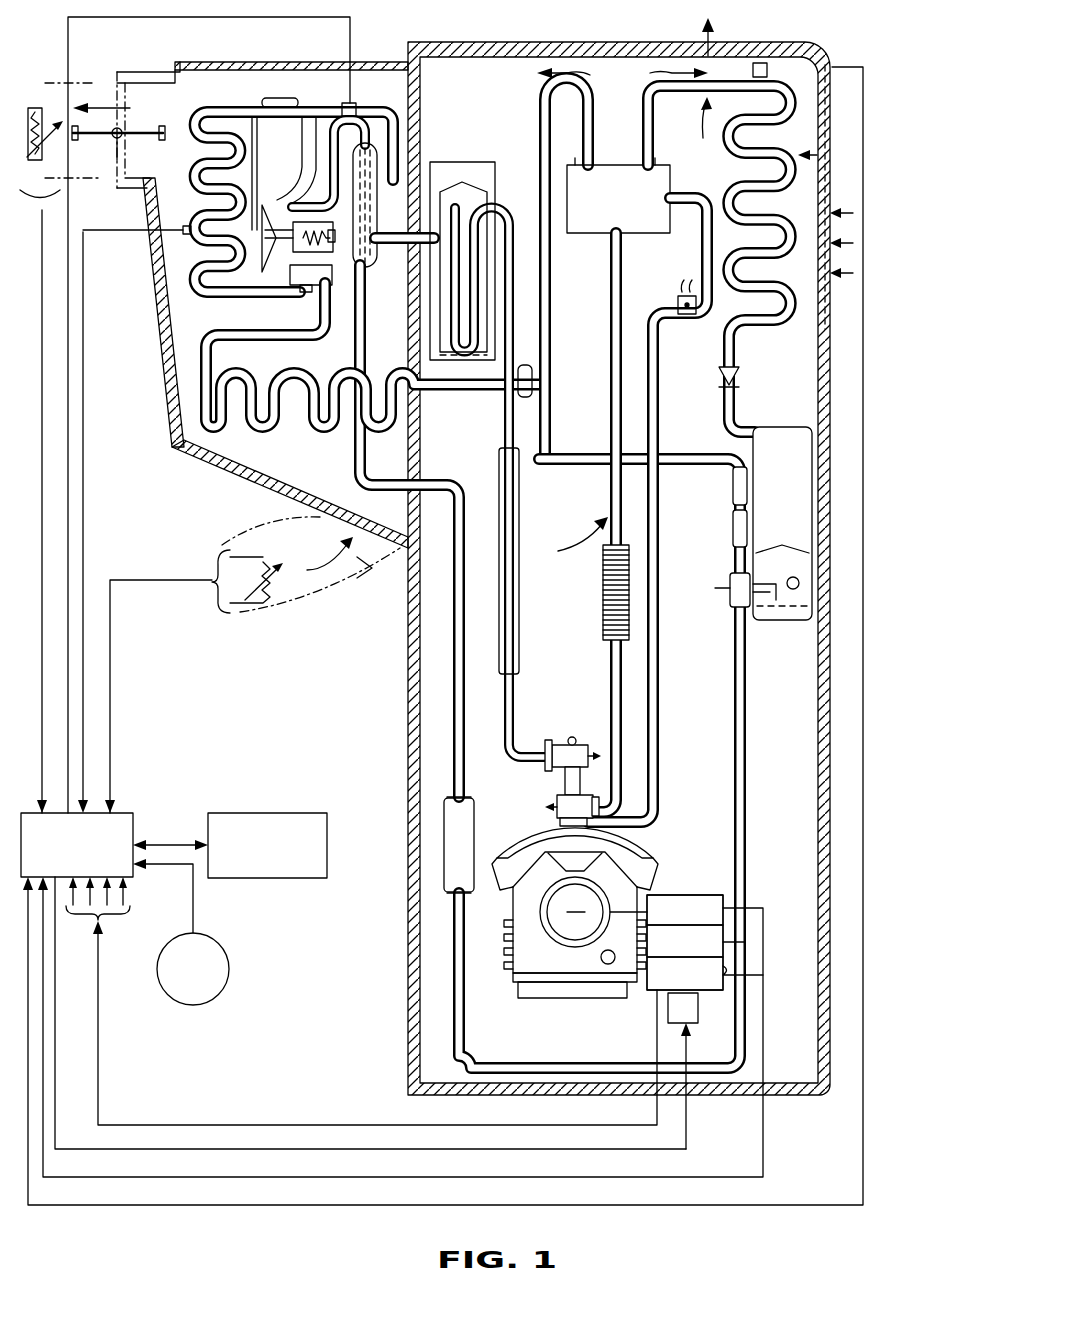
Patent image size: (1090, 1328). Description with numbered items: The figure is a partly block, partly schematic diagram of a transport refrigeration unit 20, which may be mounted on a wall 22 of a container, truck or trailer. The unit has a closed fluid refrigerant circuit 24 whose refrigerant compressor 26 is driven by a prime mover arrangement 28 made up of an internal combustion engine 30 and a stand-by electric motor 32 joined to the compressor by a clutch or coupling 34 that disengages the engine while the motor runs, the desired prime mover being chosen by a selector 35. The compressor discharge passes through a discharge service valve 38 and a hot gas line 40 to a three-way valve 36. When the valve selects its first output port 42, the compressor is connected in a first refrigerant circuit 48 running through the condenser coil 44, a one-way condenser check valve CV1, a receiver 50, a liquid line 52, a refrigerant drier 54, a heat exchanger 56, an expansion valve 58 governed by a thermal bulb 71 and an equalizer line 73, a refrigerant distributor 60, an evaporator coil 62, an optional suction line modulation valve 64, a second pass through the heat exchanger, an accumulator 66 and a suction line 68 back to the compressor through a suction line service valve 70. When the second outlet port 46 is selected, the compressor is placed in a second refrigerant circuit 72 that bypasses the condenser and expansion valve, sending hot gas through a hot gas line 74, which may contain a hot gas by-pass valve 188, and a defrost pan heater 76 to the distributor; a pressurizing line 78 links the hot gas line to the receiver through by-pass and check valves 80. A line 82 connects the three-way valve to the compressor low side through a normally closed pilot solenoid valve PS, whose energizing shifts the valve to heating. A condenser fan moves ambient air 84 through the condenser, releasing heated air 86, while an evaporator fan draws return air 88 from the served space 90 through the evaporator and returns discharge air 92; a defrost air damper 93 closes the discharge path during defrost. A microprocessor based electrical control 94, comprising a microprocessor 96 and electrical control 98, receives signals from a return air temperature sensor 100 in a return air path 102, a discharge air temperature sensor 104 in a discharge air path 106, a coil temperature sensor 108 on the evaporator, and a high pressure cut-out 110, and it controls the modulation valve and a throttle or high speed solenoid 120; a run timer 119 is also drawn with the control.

The transport refrigeration unit 20 is at (378, 1233).
The wall 22 is at (425, 125).
The closed fluid refrigerant circuit 24 is at (573, 539).
The refrigerant compressor 26 is at (513, 945).
The prime mover arrangement 28 is at (670, 893).
The internal combustion engine 30 is at (635, 992).
The stand-by electric motor 32 is at (735, 908).
The clutch or coupling 34 is at (735, 942).
The selector 35 is at (735, 968).
The three-way valve 36 is at (612, 164).
The discharge service valve 38 is at (556, 806).
The hot gas line 40 is at (612, 475).
The first output port 42 is at (655, 164).
The condenser coil 44 is at (788, 272).
The second outlet port 46 is at (568, 162).
The first refrigerant circuit 48 is at (668, 73).
The receiver 50 is at (772, 622).
The liquid line 52 is at (748, 738).
The refrigerant drier 54 is at (443, 830).
The heat exchanger 56 is at (368, 268).
The expansion valve 58 is at (270, 292).
The refrigerant distributor 60 is at (368, 328).
The evaporator coil 62 is at (188, 275).
The controllable suction line modulation valve 64 is at (352, 102).
The accumulator 66 is at (455, 163).
The suction line 68 is at (500, 428).
The suction line service valve 70 is at (570, 748).
The thermal bulb 71 is at (285, 98).
The second refrigerant circuit 72 is at (574, 259).
The equalizer line 73 is at (300, 178).
The hot gas line 74 is at (551, 275).
The defrost pan heater 76 is at (292, 425).
The by-pass or pressurizing line 78 is at (600, 455).
The by-pass and check valves 80 is at (733, 512).
The conduit or line 82 is at (660, 550).
The ambient air 84 is at (828, 160).
The heated air 86 is at (704, 42).
The return air 88 is at (325, 549).
The served space 90 is at (223, 526).
The discharge air 92 is at (117, 122).
The defrost air damper 93 is at (150, 126).
The microprocessor based electrical control 94 is at (213, 787).
The microprocessor 96 is at (133, 813).
The electrical control 98 is at (290, 813).
The return air temperature sensor 100 is at (278, 605).
The return air path 102 is at (370, 583).
The discharge air temperature sensor 104 is at (42, 112).
The discharge air path 106 is at (30, 108).
The coil temperature sensor 108 is at (183, 235).
The refrigerant pressure sensor or high pressure cut-out 110 is at (762, 62).
The run timer 119 is at (228, 965).
The throttle or high speed solenoid 120 is at (703, 1008).
The hot gas by-pass valve 188 is at (535, 395).
The pilot solenoid valve PS is at (680, 300).
The one-way condenser check valve CV1 is at (718, 376).